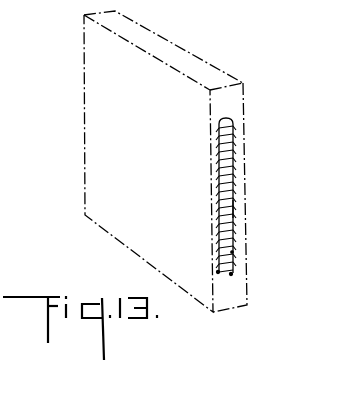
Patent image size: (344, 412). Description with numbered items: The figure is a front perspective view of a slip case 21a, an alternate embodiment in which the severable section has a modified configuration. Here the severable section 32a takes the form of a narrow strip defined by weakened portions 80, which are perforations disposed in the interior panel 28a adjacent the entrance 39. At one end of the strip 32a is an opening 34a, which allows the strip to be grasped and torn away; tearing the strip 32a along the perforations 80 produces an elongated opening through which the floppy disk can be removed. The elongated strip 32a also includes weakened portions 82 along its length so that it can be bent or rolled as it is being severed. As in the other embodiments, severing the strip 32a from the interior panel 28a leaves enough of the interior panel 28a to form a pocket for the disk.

The slip case 21a is at (228, 68).
The entrance 39 is at (260, 117).
The opening 34a is at (228, 118).
The interior panel 28a is at (240, 176).
The weakened portions 82 is at (233, 203).
The weakened portions 80 is at (232, 252).
The severable section 32a is at (231, 274).